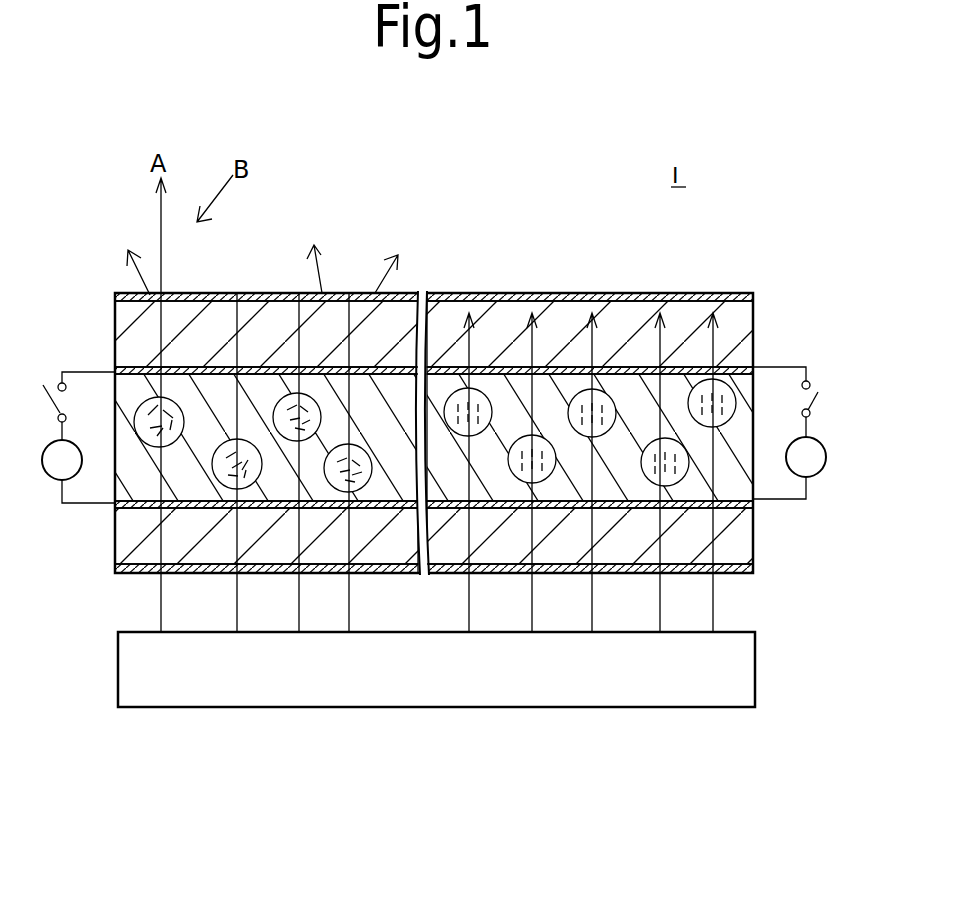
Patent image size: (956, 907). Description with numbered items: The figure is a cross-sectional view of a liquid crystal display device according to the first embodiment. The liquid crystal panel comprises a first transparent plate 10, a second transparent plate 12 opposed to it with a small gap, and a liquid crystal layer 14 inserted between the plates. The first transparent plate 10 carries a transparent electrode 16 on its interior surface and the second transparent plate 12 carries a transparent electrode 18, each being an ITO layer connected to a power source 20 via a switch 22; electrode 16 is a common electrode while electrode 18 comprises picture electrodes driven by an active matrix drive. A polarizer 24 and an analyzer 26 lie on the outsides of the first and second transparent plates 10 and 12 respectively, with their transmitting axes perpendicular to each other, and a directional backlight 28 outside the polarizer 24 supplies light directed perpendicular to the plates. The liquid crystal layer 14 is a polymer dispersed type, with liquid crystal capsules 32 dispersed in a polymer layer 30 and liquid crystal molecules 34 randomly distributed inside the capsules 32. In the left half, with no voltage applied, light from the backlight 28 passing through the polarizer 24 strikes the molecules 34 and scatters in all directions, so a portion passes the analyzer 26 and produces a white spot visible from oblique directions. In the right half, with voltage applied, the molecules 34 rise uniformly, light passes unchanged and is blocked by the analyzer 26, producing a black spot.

The first transparent plate 10 is at (266, 536).
The second transparent plate 12 is at (266, 334).
The liquid crystal layer 14 is at (266, 370).
The transparent electrode 16 is at (266, 504).
The transparent electrode 18 is at (120, 383).
The power source 20 is at (48, 475).
The switch 22 is at (47, 412).
The polarizer 24 is at (266, 568).
The analyzer 26 is at (266, 297).
The directional backlight 28 is at (593, 697).
The polymer layer 30 is at (266, 437).
The liquid crystal capsules 32 is at (237, 439).
The liquid crystal molecules 34 is at (200, 525).